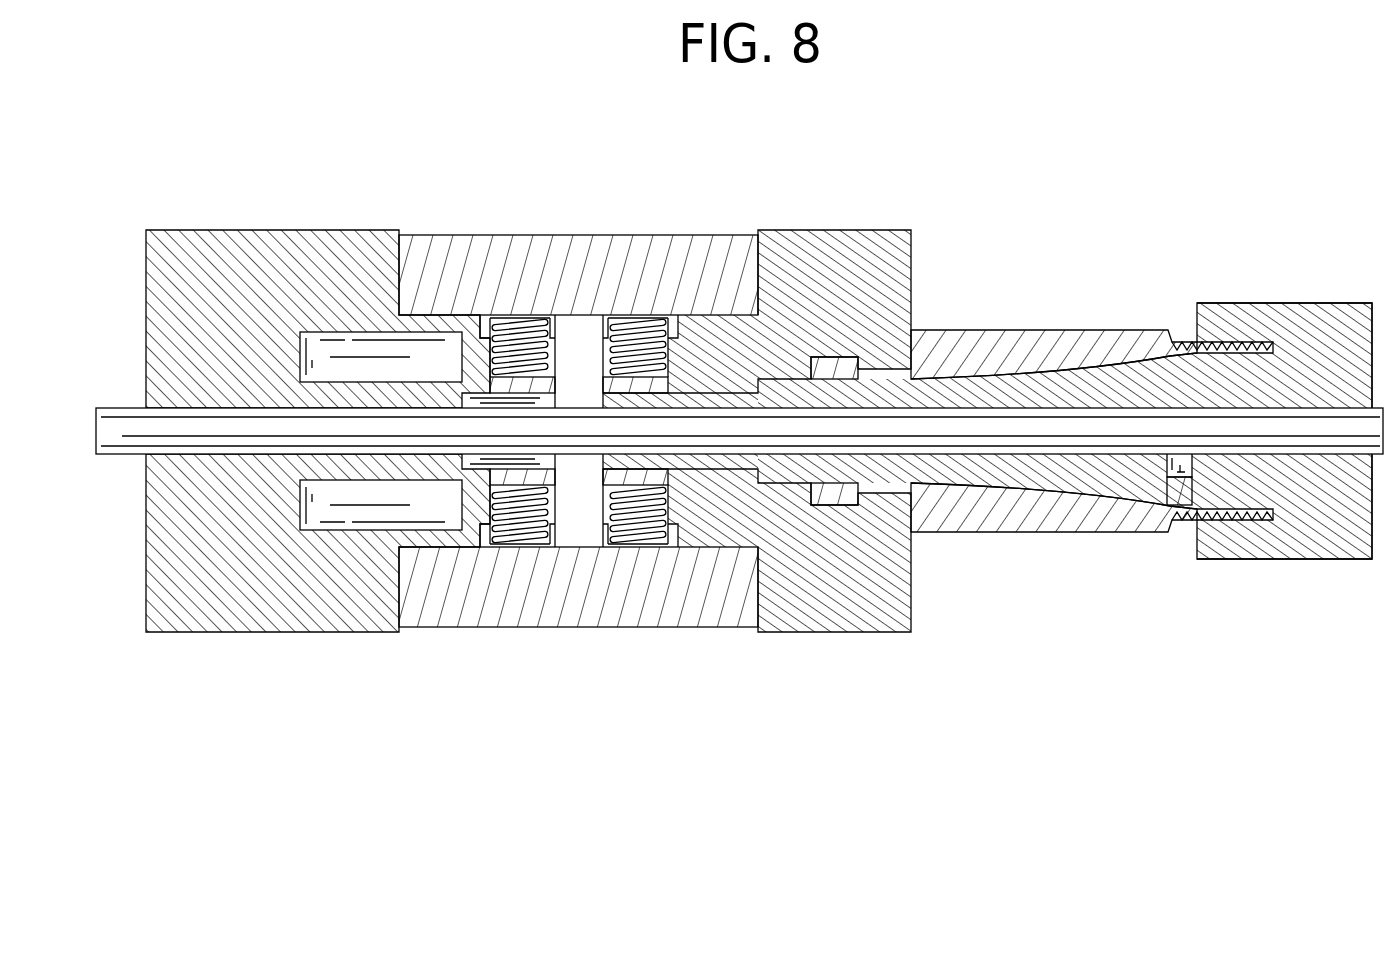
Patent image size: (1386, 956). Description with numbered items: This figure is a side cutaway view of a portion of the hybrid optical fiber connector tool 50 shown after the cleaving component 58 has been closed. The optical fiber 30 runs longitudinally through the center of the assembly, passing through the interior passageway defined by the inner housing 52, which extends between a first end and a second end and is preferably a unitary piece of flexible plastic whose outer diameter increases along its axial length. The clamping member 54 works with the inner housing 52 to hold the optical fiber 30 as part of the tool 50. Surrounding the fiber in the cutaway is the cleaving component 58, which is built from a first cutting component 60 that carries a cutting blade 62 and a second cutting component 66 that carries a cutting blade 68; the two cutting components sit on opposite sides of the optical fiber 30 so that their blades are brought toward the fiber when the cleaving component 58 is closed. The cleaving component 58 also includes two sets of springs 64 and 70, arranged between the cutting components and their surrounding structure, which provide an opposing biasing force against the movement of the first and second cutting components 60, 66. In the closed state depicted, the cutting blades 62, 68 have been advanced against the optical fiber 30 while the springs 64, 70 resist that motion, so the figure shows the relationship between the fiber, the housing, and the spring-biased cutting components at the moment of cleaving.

The optical fiber 30 is at (1010, 447).
The hybrid optical fiber connector tool 50 is at (787, 152).
The inner housing 52 is at (1252, 559).
The clamping member 54 is at (1108, 533).
The cleaving component 58 is at (370, 633).
The first cutting component 60 is at (558, 617).
The cutting blade 62 is at (596, 540).
The set of springs 64 is at (525, 535).
The second cutting component 66 is at (558, 247).
The cutting blade 68 is at (594, 325).
The set of springs 70 is at (514, 346).